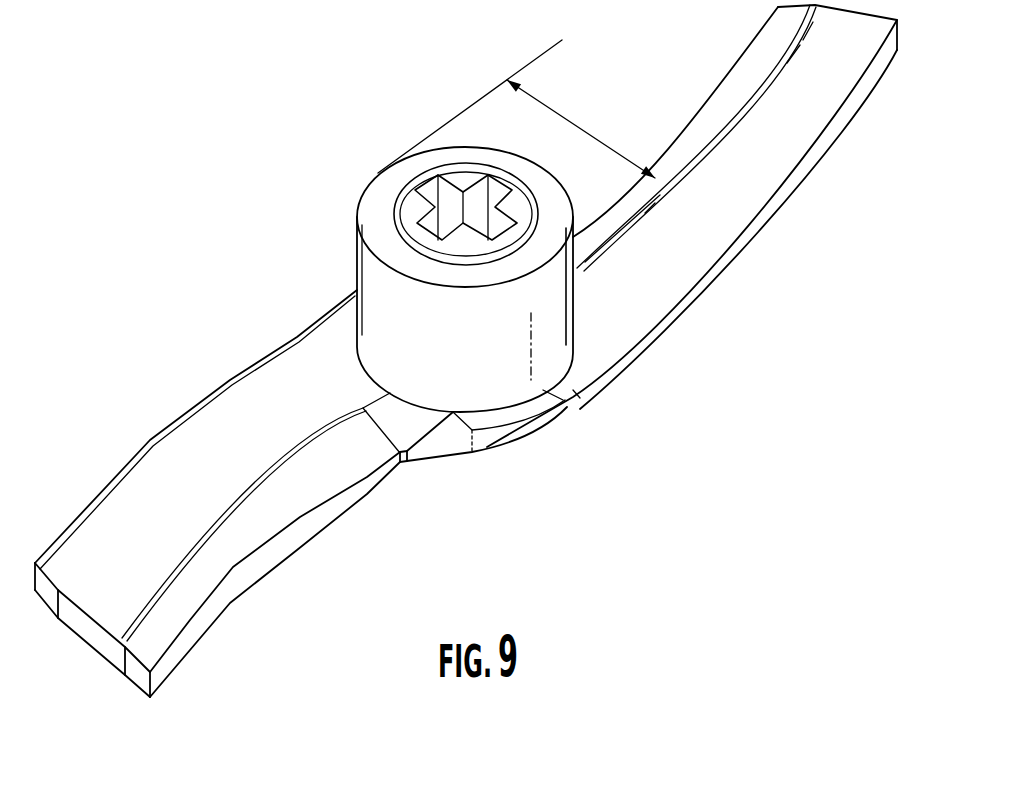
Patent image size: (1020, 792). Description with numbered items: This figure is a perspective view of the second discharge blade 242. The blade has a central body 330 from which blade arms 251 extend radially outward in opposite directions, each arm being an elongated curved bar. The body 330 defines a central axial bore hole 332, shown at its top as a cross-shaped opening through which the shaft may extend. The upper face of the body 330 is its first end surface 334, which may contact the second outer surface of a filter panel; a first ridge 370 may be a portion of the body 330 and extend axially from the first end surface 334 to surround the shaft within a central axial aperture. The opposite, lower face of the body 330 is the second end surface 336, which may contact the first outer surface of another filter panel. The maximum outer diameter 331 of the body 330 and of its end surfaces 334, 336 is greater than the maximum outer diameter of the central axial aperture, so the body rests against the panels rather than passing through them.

The second discharge blade 242 is at (258, 183).
The blade arm 251 is at (163, 455).
The body 330 is at (380, 311).
The first end surface 334 is at (363, 229).
The first ridge 370 is at (408, 205).
The central axial bore hole 332 is at (447, 195).
The maximum outer diameter 331 is at (572, 122).
The second end surface 336 is at (500, 476).